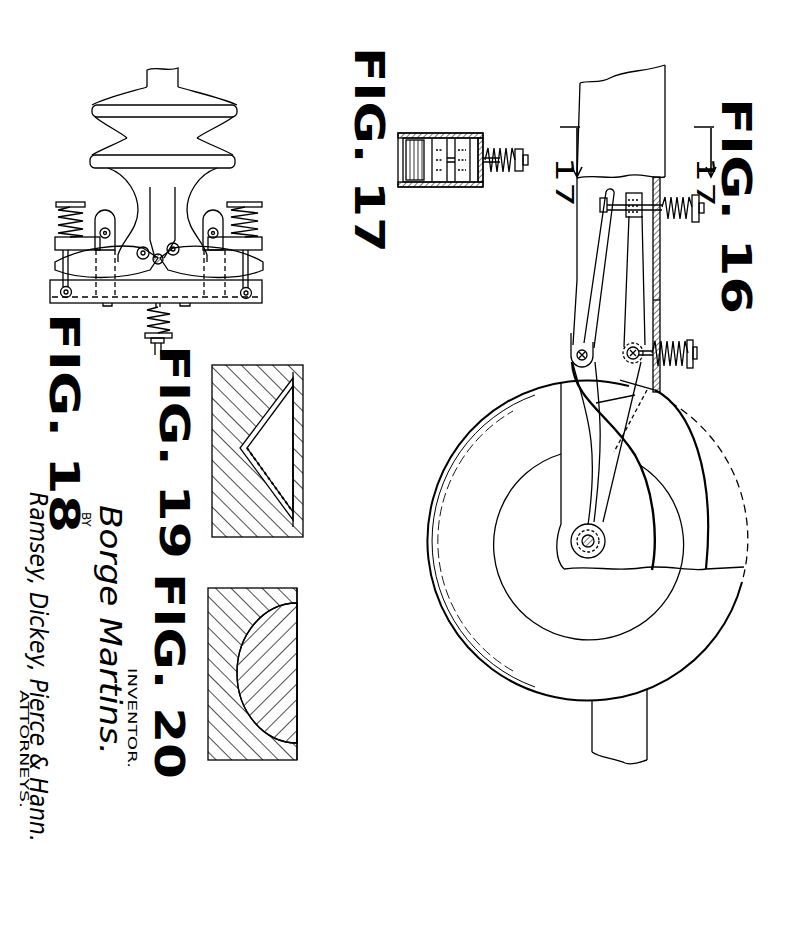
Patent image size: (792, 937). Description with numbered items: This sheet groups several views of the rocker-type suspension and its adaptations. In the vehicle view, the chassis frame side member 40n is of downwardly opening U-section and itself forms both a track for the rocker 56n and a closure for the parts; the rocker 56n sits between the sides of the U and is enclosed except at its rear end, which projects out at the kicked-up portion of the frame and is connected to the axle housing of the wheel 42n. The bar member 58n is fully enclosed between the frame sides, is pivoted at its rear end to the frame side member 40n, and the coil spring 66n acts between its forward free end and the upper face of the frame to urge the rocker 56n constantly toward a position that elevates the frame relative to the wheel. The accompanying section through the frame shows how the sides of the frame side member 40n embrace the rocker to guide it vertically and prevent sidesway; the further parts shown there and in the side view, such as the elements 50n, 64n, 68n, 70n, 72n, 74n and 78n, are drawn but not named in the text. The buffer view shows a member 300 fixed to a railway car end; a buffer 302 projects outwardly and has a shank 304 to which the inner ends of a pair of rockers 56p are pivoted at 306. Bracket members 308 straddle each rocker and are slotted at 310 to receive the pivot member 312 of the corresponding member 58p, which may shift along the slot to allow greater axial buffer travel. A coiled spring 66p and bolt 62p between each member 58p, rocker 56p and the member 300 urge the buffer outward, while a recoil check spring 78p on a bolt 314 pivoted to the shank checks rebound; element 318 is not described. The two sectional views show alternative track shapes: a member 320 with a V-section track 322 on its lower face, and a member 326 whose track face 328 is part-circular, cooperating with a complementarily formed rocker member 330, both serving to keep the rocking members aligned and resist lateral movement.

In FIG. 16, the frame side member 40n is at (647, 734).
In FIG. 17, the frame side member 40n is at (431, 186).
In FIG. 16, the wheel 42n is at (527, 686).
In FIG. 17, the piston 50n is at (414, 181).
In FIG. 16, the rocker 56n is at (621, 364).
In FIG. 16, the bar member 58n is at (577, 282).
In FIG. 17, the bar member 58n is at (458, 182).
In FIG. 16, the bolt 64n is at (633, 343).
In FIG. 16, the coil spring 66n is at (677, 213).
In FIG. 17, the coil spring 66n is at (497, 173).
In FIG. 16, the link 68n is at (634, 212).
In FIG. 16, the bracket 70n is at (674, 313).
In FIG. 16, the mounting plate 72n is at (658, 224).
In FIG. 16, the rod 74n is at (597, 202).
In FIG. 16, the adjusting spring screw 78n is at (691, 352).
In FIG. 18, the member 300 is at (262, 290).
In FIG. 18, the buffer 302 is at (236, 162).
In FIG. 18, the shank 304 is at (160, 237).
In FIG. 18, the pivotal connection 306 is at (195, 242).
In FIG. 18, the bracket members 308 is at (136, 250).
In FIG. 18, the slots 310 is at (104, 210).
In FIG. 18, the pivot member 312 is at (105, 302).
In FIG. 18, the bolt 314 is at (172, 316).
In FIG. 18, the bolt 318 is at (237, 302).
In FIG. 18, the rockers 56p is at (117, 306).
In FIG. 18, the members 58p is at (45, 251).
In FIG. 18, the bolt 62p is at (45, 300).
In FIG. 18, the coiled spring 66p is at (56, 206).
In FIG. 18, the recoil check spring 78p is at (150, 322).
In FIG. 19, the member 320 is at (302, 438).
In FIG. 19, the track 322 is at (278, 397).
In FIG. 20, the member 326 is at (296, 672).
In FIG. 20, the track face 328 is at (258, 618).
In FIG. 20, the rocker member 330 is at (222, 620).